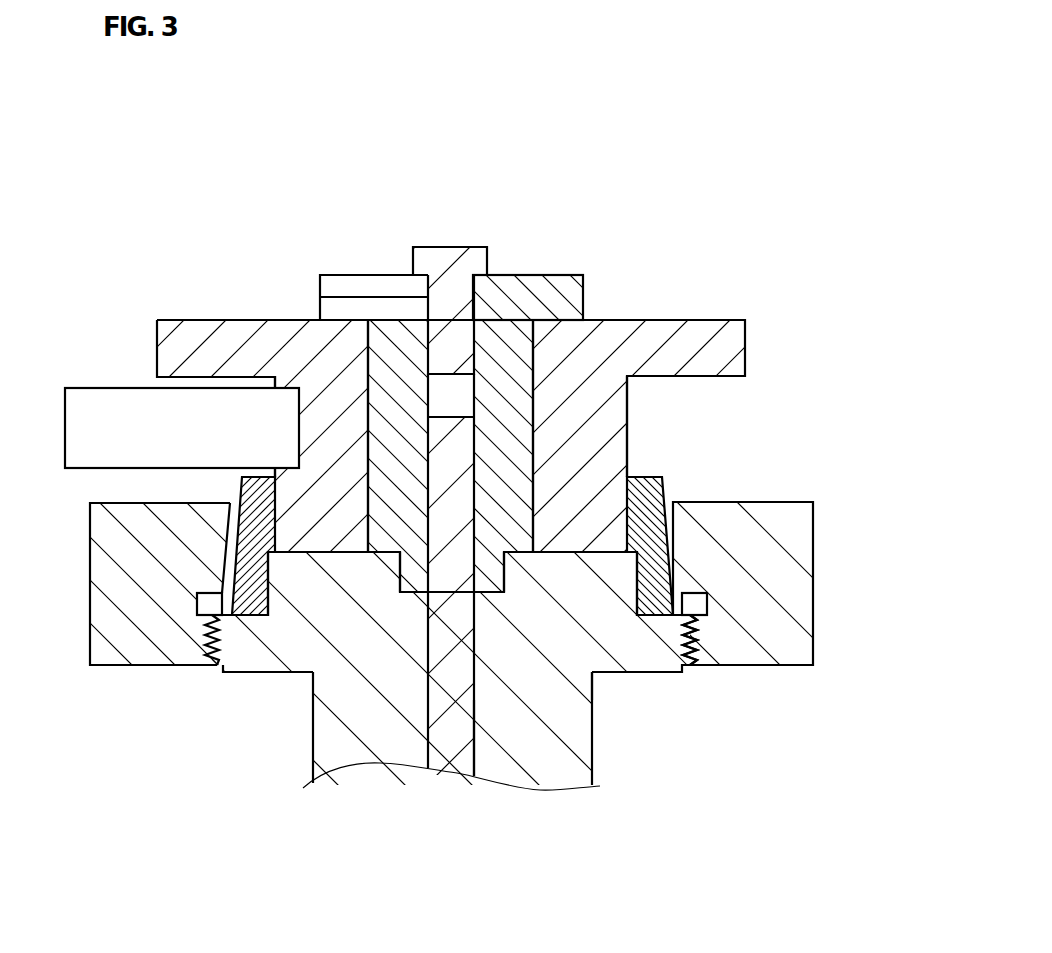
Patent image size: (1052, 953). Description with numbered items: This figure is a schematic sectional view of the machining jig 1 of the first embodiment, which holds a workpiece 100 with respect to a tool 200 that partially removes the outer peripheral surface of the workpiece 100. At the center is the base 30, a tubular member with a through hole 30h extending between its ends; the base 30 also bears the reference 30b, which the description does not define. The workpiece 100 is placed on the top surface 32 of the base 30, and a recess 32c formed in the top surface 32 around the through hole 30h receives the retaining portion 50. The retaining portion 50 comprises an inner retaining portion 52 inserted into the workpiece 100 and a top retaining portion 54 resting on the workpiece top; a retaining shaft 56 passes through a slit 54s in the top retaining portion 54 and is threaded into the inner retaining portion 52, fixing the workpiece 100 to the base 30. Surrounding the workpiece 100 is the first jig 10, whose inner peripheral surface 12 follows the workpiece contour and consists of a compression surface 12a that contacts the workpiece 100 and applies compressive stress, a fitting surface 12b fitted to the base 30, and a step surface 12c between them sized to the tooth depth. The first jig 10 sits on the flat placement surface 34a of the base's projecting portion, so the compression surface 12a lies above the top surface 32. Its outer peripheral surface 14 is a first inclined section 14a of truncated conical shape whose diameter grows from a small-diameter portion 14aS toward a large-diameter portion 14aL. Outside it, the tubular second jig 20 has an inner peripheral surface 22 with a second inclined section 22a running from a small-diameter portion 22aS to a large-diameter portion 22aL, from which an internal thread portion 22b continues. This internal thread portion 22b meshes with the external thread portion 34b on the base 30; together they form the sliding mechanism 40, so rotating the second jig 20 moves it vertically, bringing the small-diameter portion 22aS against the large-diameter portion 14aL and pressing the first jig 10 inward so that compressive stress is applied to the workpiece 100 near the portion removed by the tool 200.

The machining jig 1 is at (801, 385).
The first jig 10 is at (642, 473).
The inner peripheral surface 12 is at (77, 288).
The compression surface 12a is at (300, 472).
The fitting surface 12b is at (282, 488).
The step surface 12c is at (263, 556).
The outer peripheral surface 14 is at (683, 580).
The first inclined section 14a is at (805, 405).
The small-diameter portion 14aS is at (661, 480).
The large-diameter portion 14aL is at (683, 592).
The second jig 20 is at (100, 665).
The inner peripheral surface 22 is at (93, 849).
The second inclined section 22a is at (282, 797).
The large-diameter portion 22aL is at (258, 605).
The small-diameter portion 22aS is at (257, 480).
The internal thread portion 22b is at (217, 662).
The base 30 is at (600, 786).
The boss of base body 30b is at (447, 743).
The through hole 30h is at (467, 733).
The top surface 32 is at (668, 675).
The recess 32c is at (608, 690).
The placement surface 34a is at (707, 598).
The external thread portion 34b is at (698, 627).
The sliding mechanism 40 is at (888, 618).
The retaining portion 50 is at (627, 194).
The inner retaining portion 52 is at (520, 335).
The top retaining portion 54 is at (563, 288).
The slit 54s is at (337, 282).
The retaining shaft 56 is at (425, 257).
The workpiece 100 is at (693, 325).
The tool 200 is at (75, 428).